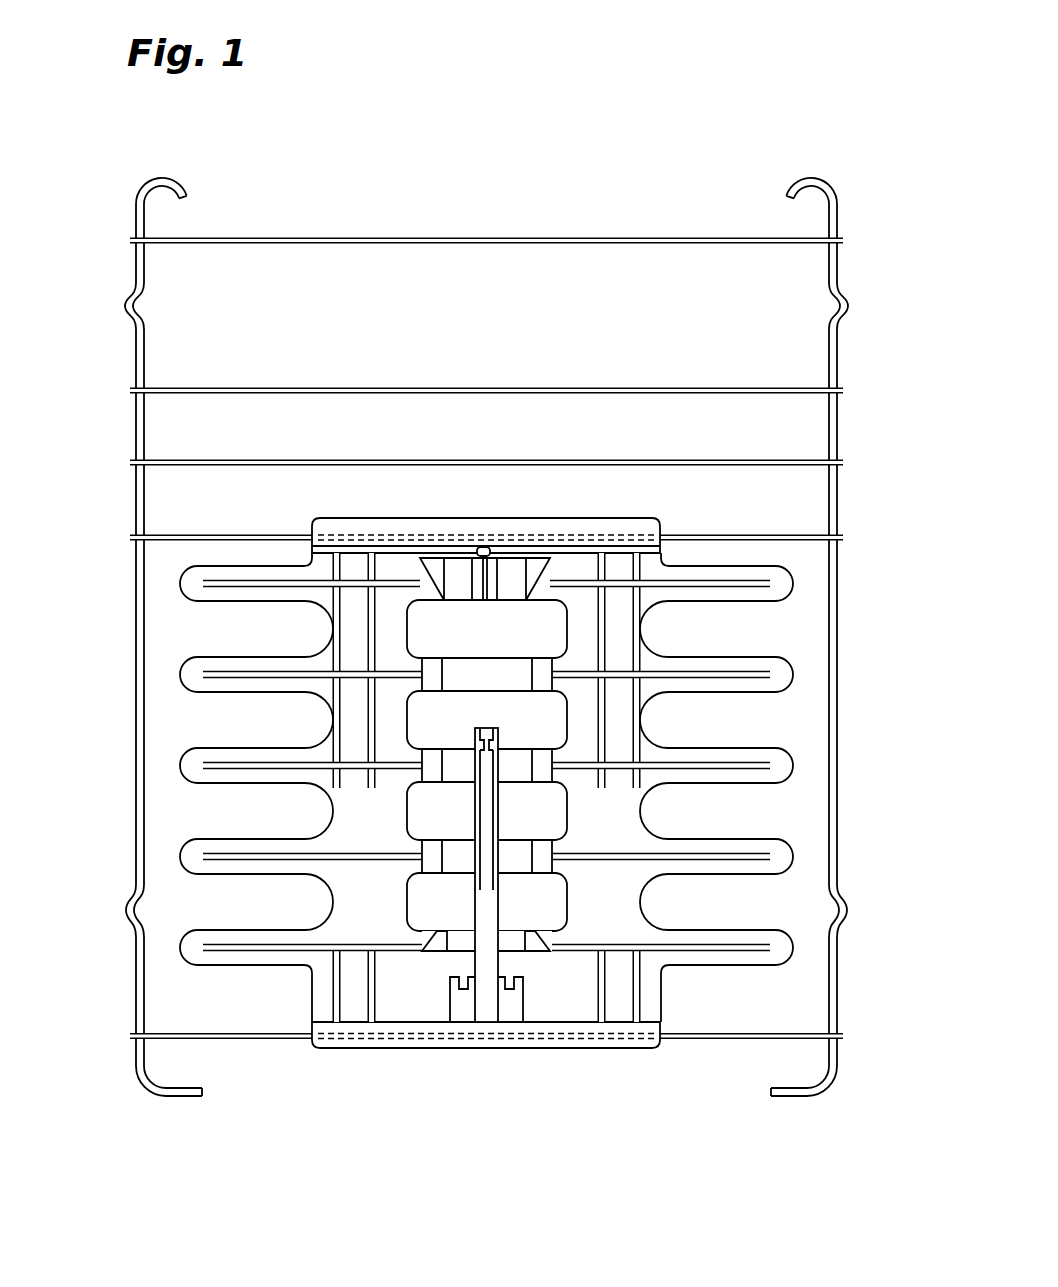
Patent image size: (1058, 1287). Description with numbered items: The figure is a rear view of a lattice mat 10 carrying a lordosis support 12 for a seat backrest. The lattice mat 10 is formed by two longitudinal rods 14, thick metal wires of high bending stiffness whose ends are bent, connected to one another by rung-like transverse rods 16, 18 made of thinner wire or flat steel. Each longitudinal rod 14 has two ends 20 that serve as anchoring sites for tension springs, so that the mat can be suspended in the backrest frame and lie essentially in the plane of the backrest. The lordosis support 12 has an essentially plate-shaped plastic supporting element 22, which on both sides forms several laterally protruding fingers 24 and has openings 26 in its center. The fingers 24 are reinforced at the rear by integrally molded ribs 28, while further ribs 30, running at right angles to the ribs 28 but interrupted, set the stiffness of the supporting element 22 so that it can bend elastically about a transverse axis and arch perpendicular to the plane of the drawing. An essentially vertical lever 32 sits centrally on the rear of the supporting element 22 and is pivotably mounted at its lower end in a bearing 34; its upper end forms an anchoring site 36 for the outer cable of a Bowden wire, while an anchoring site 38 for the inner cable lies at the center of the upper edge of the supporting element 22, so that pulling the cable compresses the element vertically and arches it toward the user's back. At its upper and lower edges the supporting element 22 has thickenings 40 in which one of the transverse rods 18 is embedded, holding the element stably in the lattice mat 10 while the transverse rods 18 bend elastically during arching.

The lattice mat 10 is at (632, 204).
The lordosis support 12 is at (694, 517).
The longitudinal rods 14 is at (838, 266).
The transverse rods 16 is at (318, 238).
The transverse rods 18 is at (237, 536).
The ends 20 is at (132, 306).
The supporting element 22 is at (622, 837).
The fingers 24 is at (795, 671).
The openings 26 is at (503, 655).
The ribs 28 is at (704, 582).
The ribs 30 is at (641, 694).
The lever 32 is at (493, 896).
The bearing 34 is at (508, 1004).
The anchoring site 36 is at (497, 748).
The anchoring site 38 is at (487, 547).
The thickenings 40 is at (582, 518).